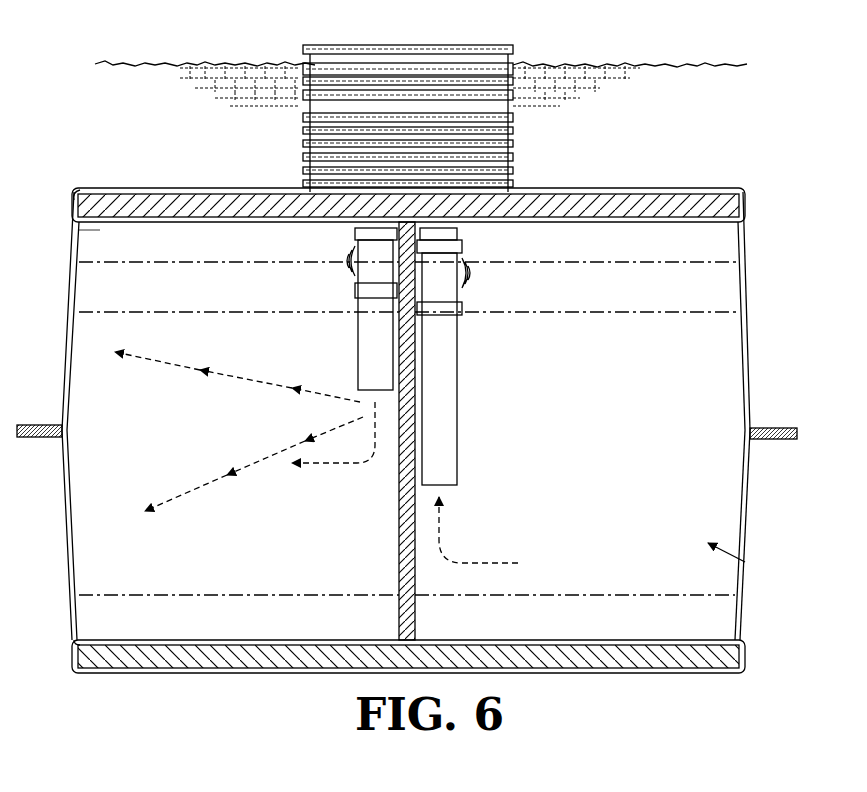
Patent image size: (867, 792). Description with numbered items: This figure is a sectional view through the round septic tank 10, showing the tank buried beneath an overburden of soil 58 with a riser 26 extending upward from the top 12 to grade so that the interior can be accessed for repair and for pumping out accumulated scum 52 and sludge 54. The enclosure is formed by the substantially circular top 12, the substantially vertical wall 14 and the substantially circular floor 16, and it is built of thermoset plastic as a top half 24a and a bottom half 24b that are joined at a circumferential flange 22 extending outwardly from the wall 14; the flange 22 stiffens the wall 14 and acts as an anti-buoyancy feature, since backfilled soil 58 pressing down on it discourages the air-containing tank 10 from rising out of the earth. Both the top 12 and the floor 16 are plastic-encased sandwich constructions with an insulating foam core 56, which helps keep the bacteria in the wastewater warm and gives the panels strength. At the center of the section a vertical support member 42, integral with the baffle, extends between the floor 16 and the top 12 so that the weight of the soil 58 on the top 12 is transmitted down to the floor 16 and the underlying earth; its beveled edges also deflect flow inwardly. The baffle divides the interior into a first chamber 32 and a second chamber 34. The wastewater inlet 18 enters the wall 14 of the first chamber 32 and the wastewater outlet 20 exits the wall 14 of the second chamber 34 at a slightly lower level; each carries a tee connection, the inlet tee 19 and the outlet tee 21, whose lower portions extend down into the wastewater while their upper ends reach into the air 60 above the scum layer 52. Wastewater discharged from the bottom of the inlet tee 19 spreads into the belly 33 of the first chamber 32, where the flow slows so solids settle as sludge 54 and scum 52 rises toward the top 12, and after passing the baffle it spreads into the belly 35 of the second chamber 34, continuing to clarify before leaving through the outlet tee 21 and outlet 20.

The round septic tank 10 is at (421, 434).
The top 12 is at (210, 188).
The wall 14 is at (64, 335).
The floor 16 is at (566, 674).
The wastewater inlet 18 is at (350, 251).
The inlet tee 19 is at (358, 349).
The wastewater outlet 20 is at (464, 277).
The outlet tee 21 is at (458, 403).
The circumferential flange 22 is at (777, 427).
The top half 24a is at (751, 352).
The bottom half 24b is at (747, 526).
The riser 26 is at (513, 147).
The first chamber 32 is at (103, 520).
The belly of the first chamber 33 is at (238, 450).
The second chamber 34 is at (745, 562).
The belly of the second chamber 35 is at (603, 450).
The vertical support member 42 is at (398, 520).
The scum 52 is at (234, 261).
The sludge 54 is at (266, 594).
The foam core 56 is at (68, 205).
The soil 58 is at (202, 63).
The air 60 is at (100, 236).